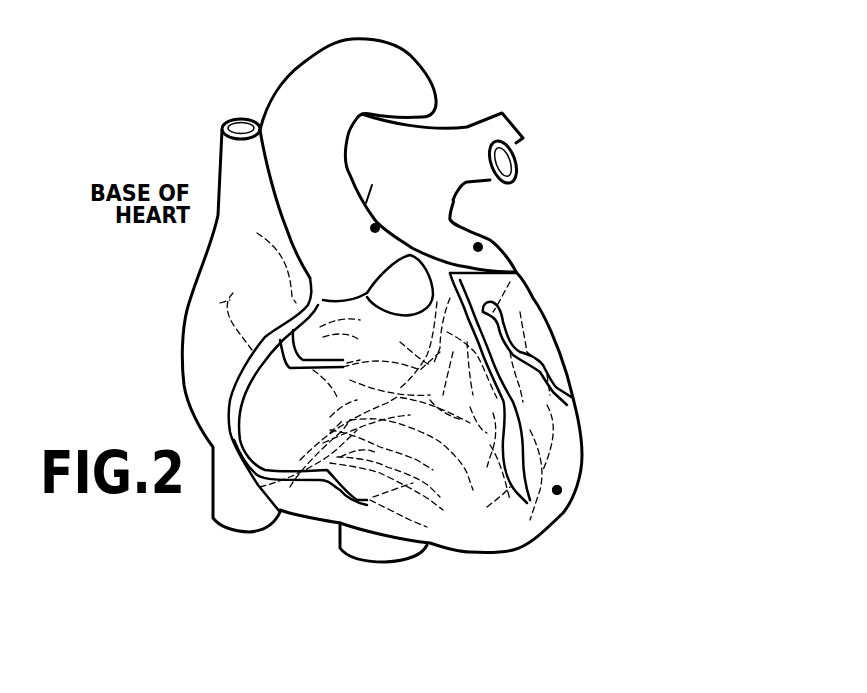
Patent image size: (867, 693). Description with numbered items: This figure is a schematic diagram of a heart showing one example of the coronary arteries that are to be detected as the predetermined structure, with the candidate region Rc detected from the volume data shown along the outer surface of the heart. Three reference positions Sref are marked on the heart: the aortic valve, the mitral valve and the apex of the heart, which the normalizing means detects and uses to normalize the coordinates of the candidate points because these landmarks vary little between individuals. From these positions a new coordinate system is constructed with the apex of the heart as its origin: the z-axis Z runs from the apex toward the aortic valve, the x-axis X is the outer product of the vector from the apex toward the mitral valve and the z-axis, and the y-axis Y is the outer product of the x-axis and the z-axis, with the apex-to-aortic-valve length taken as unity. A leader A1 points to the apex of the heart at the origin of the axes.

The reference positions Sref is at (380, 226).
The candidate region Rc is at (287, 327).
The apex axis point A1 is at (557, 490).
The x-axis X is at (413, 580).
The y-axis Y is at (602, 367).
The z-axis Z is at (557, 490).